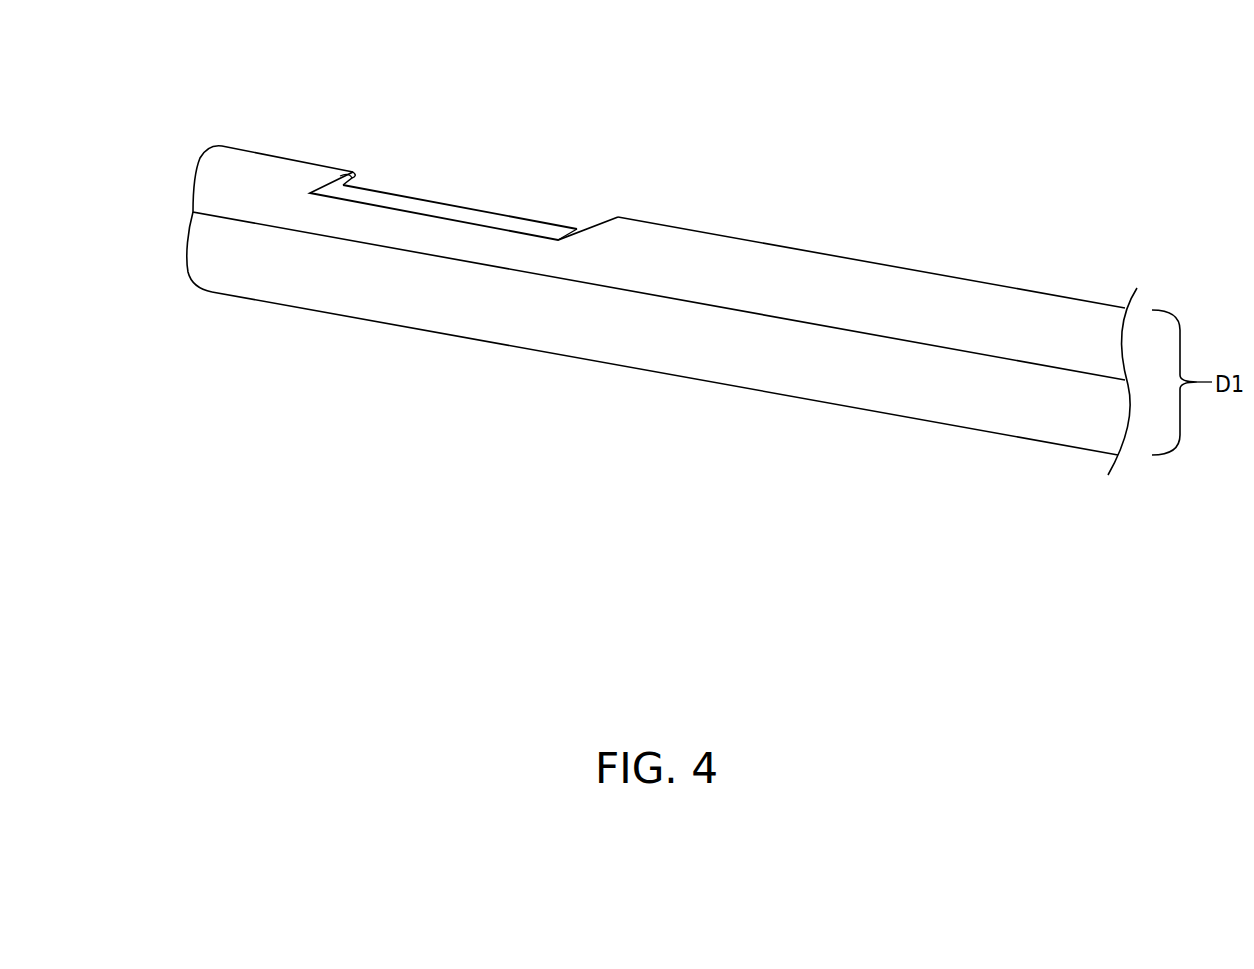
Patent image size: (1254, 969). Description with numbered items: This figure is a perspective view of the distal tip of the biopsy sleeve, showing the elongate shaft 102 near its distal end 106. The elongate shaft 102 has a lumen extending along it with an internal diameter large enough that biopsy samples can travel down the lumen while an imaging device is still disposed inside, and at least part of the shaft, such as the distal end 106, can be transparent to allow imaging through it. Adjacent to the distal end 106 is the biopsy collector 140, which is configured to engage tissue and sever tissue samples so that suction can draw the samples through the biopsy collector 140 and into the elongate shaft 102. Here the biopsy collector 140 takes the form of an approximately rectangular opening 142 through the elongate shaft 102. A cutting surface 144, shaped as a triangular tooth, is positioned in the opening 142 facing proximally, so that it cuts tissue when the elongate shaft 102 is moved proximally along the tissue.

The elongate shaft 102 is at (729, 235).
The distal end 106 is at (212, 293).
The biopsy collector 140 is at (477, 137).
The opening 142 is at (557, 224).
The cutting surface 144 is at (355, 173).